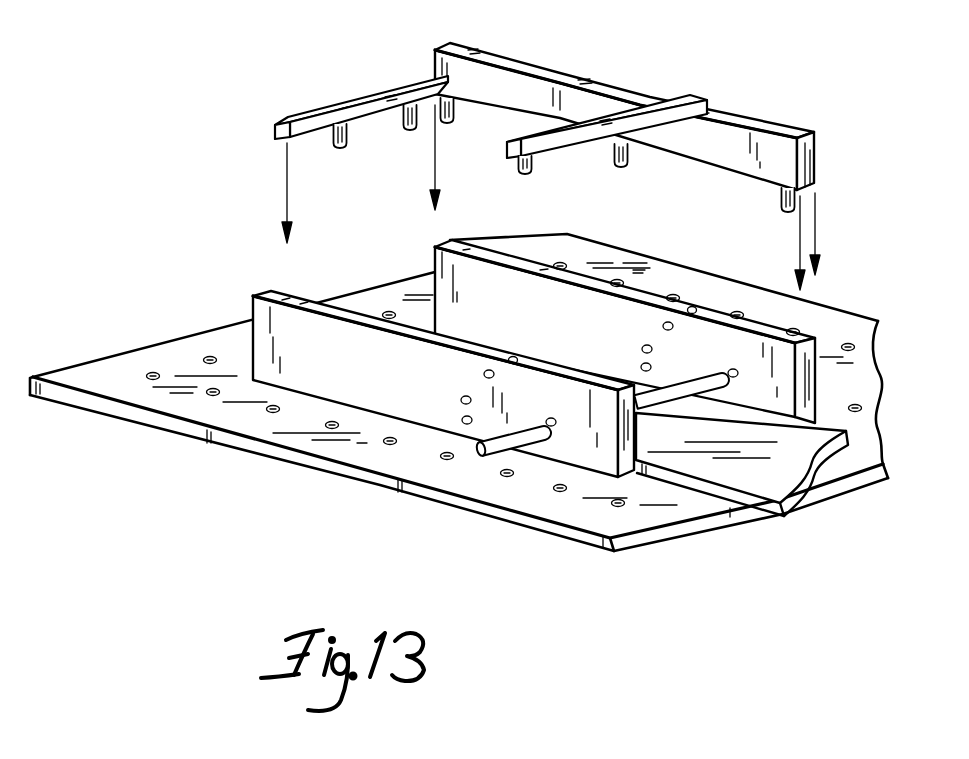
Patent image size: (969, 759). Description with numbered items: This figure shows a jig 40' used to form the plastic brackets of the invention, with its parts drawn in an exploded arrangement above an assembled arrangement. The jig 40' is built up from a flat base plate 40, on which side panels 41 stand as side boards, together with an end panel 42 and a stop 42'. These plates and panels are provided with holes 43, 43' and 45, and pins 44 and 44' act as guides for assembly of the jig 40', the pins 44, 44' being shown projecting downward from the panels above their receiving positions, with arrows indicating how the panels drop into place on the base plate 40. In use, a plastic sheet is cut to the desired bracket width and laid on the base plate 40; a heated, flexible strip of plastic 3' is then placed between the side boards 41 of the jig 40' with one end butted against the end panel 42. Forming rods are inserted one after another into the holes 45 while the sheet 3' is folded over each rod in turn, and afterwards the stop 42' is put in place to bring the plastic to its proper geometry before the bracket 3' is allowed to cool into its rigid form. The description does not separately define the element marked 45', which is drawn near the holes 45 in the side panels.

The base plate 40 is at (459, 412).
The jig 40' is at (459, 468).
The side panel 41 is at (580, 97).
The end panel 42 is at (443, 268).
The stop 42' is at (607, 98).
The holes 43 is at (481, 385).
The holes 43' is at (569, 312).
The pin 44 is at (563, 158).
The pin 44' is at (506, 182).
The holes 45 is at (573, 365).
The pins 45' is at (611, 394).
The bracket 3' is at (742, 494).